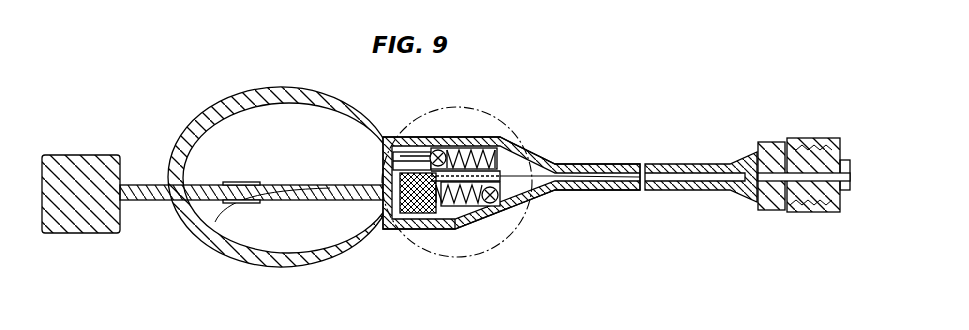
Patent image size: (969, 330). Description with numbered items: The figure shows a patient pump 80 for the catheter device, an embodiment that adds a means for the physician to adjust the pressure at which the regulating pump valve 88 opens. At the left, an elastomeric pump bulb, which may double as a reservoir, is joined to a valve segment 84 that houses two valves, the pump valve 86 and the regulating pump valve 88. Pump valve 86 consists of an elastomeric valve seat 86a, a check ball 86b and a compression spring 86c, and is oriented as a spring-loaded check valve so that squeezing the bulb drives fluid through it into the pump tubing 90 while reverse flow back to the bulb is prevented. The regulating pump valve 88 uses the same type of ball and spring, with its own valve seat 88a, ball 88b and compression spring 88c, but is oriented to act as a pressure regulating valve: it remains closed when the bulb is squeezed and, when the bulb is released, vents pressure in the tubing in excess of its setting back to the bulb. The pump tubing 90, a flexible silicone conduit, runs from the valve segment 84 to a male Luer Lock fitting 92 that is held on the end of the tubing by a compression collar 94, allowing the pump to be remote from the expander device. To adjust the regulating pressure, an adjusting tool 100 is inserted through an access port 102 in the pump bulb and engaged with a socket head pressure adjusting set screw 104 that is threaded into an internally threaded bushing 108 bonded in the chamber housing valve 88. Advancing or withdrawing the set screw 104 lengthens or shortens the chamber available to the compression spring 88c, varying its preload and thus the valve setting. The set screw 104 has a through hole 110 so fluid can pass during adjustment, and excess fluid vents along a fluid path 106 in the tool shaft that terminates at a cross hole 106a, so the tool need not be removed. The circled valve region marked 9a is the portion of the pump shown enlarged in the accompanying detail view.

The patient pump 80 is at (284, 64).
The valve segment 84 is at (462, 228).
The pump valve 86 is at (532, 104).
The elastomeric valve seat 86a is at (436, 150).
The check ball 86b is at (462, 172).
The compression spring 86c is at (505, 137).
The regulating pump valve 88 is at (452, 228).
The valve seat 88a is at (540, 193).
The ball 88b is at (494, 206).
The compression spring 88c is at (488, 216).
The pump tubing 90 is at (610, 163).
The male Luer Lock fitting 92 is at (807, 140).
The compression collar 94 is at (774, 212).
The enlarged view portion 9a is at (515, 226).
The adjusting tool 100 is at (120, 230).
The access port 102 is at (166, 180).
The pressure adjusting set screw 104 is at (426, 218).
The fluid path 106 is at (342, 183).
The cross hole 106a is at (342, 200).
The internally threaded bushing 108 is at (412, 216).
The through hole 110 is at (432, 150).